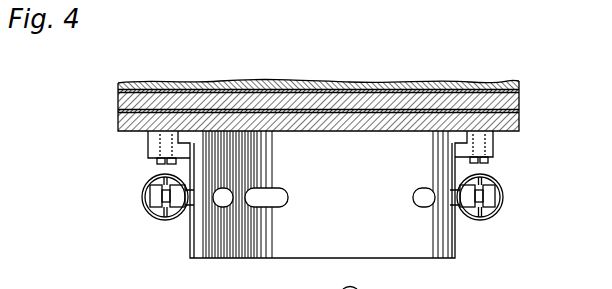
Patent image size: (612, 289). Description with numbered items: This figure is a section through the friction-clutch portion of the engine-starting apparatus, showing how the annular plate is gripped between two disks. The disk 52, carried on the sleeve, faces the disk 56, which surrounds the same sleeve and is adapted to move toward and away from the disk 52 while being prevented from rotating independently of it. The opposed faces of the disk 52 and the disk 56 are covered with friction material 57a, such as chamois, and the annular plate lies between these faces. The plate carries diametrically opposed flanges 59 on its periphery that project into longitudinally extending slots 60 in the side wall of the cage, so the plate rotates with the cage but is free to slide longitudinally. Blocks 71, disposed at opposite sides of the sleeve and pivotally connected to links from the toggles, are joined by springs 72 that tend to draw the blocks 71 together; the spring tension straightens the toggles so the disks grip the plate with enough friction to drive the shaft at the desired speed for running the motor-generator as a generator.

The disk 52 is at (442, 80).
The friction material 57a is at (518, 104).
The disk 56 is at (520, 118).
The blocks 71 is at (320, 210).
The springs 72 is at (143, 209).
The flanges 59 is at (313, 14).
The slots 60 is at (388, 12).